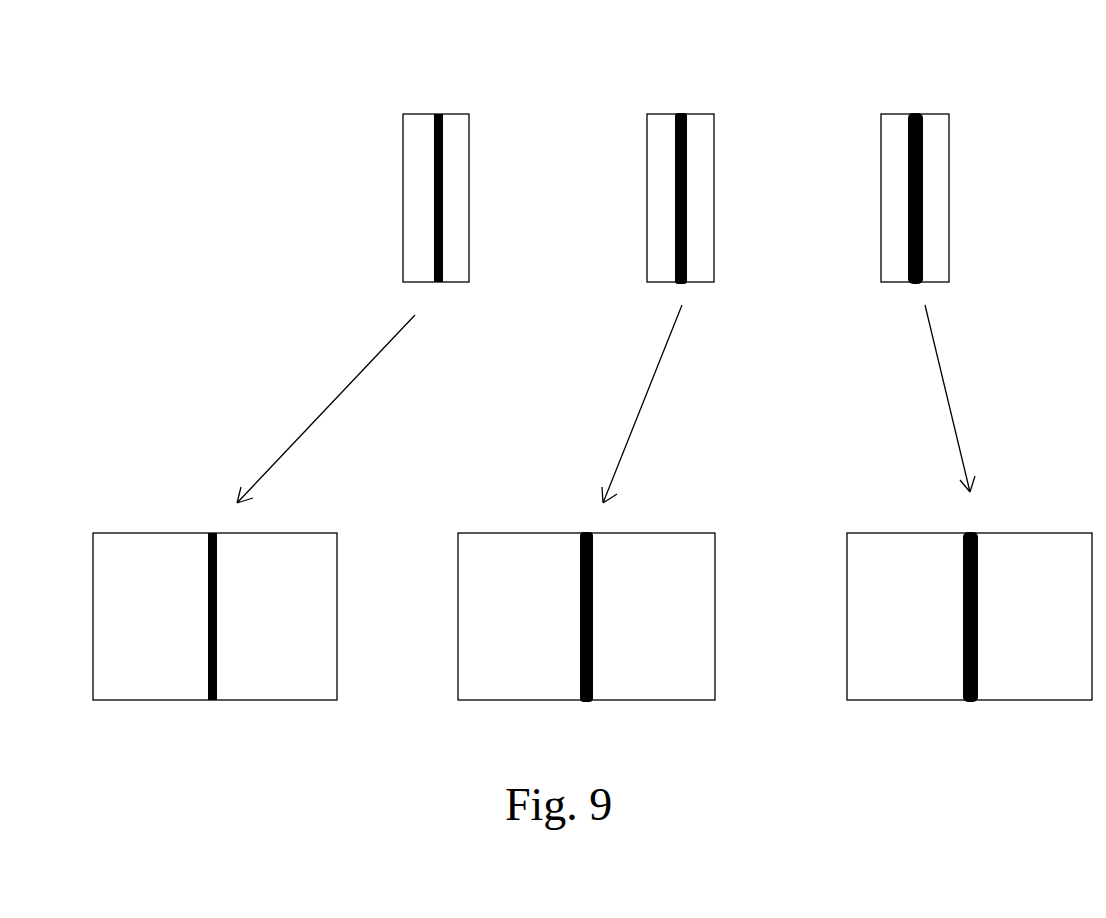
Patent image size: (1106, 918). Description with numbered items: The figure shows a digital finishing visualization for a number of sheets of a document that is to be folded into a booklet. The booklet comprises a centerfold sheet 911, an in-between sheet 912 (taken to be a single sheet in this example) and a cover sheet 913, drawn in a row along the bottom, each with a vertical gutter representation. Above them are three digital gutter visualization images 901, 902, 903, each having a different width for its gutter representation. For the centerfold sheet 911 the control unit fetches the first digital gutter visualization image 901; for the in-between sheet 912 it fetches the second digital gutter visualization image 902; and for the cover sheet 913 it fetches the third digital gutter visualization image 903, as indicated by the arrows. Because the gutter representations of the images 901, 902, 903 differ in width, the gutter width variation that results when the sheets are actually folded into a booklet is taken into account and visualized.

The first digital gutter visualization image 901 is at (432, 113).
The second digital gutter visualization image 902 is at (677, 113).
The third digital gutter visualization image 903 is at (912, 113).
The centerfold sheet 911 is at (119, 533).
The in-between sheet 912 is at (487, 533).
The cover sheet 913 is at (876, 533).